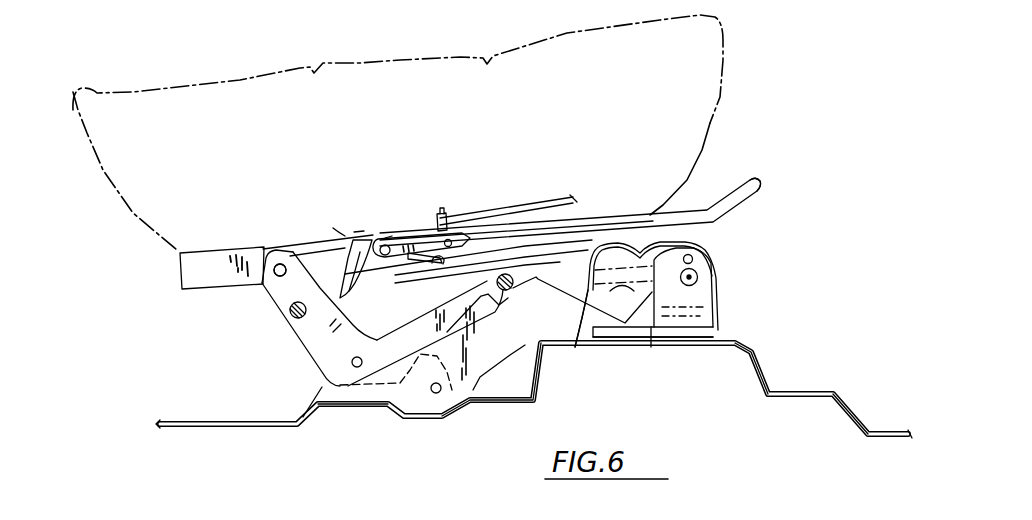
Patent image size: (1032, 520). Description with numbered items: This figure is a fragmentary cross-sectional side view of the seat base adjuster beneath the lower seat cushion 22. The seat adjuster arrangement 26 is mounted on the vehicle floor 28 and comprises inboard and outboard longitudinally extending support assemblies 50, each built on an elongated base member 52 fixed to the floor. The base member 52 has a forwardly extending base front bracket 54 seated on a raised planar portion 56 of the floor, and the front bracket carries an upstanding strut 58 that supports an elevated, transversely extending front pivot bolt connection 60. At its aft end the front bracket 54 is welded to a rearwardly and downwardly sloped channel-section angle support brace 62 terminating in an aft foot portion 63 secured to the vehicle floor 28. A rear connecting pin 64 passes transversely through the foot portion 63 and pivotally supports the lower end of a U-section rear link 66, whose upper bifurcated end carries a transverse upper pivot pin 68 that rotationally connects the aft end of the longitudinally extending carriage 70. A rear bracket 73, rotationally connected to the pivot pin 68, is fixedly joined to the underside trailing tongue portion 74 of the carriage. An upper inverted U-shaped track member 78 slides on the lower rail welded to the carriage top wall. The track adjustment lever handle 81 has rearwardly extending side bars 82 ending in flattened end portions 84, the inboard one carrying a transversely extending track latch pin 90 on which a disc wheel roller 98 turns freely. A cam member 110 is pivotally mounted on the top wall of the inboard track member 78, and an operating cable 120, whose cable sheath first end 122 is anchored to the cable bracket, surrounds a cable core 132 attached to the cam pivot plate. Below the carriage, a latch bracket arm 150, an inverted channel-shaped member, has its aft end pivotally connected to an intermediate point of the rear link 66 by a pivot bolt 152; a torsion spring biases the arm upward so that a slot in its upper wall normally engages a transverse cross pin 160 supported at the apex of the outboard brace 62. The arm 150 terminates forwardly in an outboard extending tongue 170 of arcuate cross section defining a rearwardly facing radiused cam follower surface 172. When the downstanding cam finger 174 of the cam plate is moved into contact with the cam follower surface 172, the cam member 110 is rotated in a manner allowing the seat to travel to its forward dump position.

The lower seat cushion 22 is at (723, 58).
The seat adjuster arrangement 26 is at (185, 320).
The vehicle floor 28 is at (190, 421).
The support assembly 50 is at (835, 280).
The base member 52 is at (716, 315).
The base front bracket 54 is at (688, 338).
The raised planar portion 56 is at (727, 335).
The upstanding strut 58 is at (700, 293).
The front pivot bolt connection 60 is at (697, 273).
The angle support brace 62 is at (486, 383).
The aft foot portion 63 is at (380, 398).
The rear connecting pin 64 is at (433, 396).
The rear link 66 is at (313, 343).
The upper pivot pin 68 is at (273, 247).
The carriage 70 is at (708, 243).
The rear bracket 73 is at (307, 260).
The trailing tongue portion 74 is at (651, 347).
The upper track member 78 is at (180, 270).
The track adjustment lever handle 81 is at (762, 180).
The side bar 82 is at (618, 228).
The flattened end portion 84 is at (413, 237).
The track latch pin 90 is at (348, 238).
The disc wheel roller 98 is at (378, 228).
The cam member 110 is at (358, 229).
The operating cable 120 is at (533, 198).
The cable sheath first end 122 is at (457, 212).
The cable core 132 is at (388, 236).
The latch bracket arm 150 is at (423, 320).
The pivot bolt 152 is at (353, 365).
The cross pin 160 is at (480, 342).
The tongue 170 is at (575, 347).
The cam follower surface 172 is at (511, 292).
The cam finger 174 is at (333, 228).